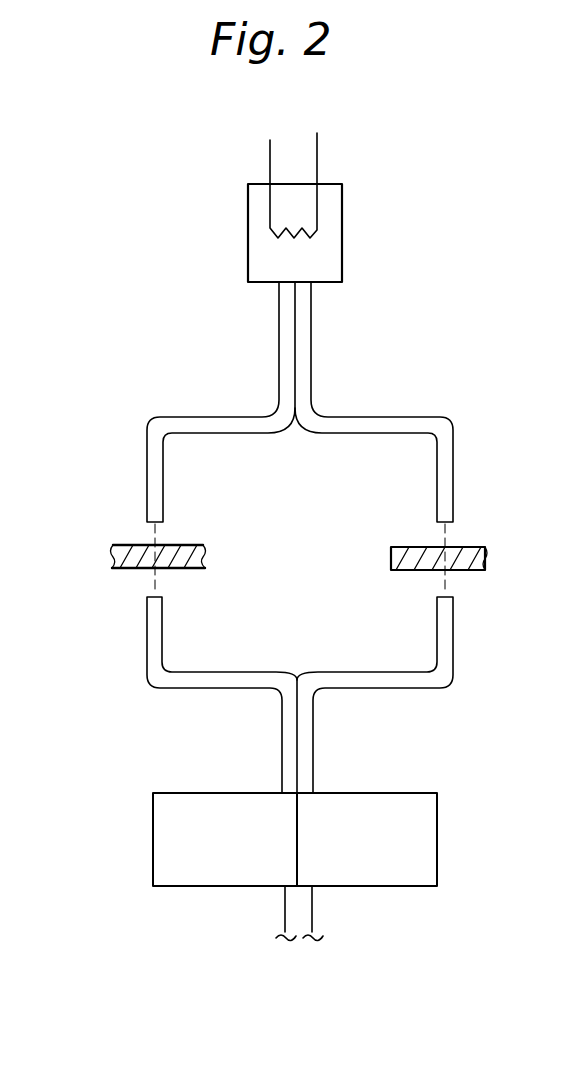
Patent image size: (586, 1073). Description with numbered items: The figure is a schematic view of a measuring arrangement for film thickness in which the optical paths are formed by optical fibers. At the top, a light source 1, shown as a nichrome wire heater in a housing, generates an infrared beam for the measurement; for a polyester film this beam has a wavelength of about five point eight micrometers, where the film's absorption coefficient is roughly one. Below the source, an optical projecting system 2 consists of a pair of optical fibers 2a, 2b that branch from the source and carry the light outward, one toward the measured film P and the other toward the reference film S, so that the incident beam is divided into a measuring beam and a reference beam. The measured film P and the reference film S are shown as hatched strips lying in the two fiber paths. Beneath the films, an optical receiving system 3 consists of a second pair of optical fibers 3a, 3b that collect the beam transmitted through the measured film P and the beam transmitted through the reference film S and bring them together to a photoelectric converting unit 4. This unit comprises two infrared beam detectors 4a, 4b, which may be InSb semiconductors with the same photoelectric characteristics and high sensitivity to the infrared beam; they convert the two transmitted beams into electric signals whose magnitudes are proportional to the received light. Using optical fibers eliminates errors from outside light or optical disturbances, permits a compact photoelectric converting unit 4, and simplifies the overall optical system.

The light source 1 is at (256, 240).
The optical projecting system 2 is at (97, 298).
The optical fiber 2a is at (278, 336).
The optical fiber 2b is at (312, 336).
The measured film P is at (112, 556).
The reference film S is at (487, 558).
The optical receiving system 3 is at (93, 710).
The optical fiber 3a is at (163, 680).
The optical fiber 3b is at (420, 683).
The photoelectric converting unit 4 is at (84, 872).
The infrared beam detector 4a is at (204, 890).
The infrared beam detector 4b is at (434, 888).